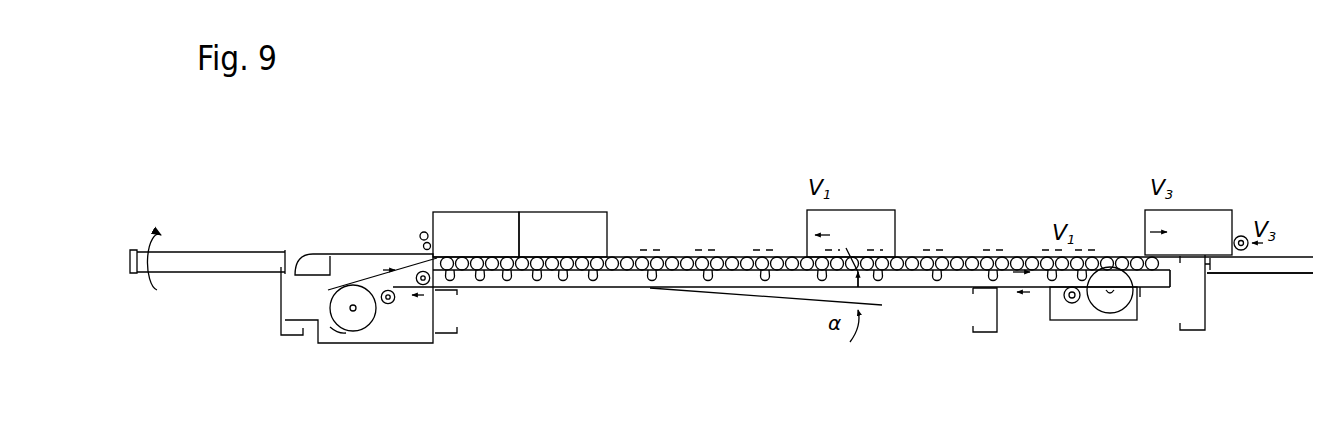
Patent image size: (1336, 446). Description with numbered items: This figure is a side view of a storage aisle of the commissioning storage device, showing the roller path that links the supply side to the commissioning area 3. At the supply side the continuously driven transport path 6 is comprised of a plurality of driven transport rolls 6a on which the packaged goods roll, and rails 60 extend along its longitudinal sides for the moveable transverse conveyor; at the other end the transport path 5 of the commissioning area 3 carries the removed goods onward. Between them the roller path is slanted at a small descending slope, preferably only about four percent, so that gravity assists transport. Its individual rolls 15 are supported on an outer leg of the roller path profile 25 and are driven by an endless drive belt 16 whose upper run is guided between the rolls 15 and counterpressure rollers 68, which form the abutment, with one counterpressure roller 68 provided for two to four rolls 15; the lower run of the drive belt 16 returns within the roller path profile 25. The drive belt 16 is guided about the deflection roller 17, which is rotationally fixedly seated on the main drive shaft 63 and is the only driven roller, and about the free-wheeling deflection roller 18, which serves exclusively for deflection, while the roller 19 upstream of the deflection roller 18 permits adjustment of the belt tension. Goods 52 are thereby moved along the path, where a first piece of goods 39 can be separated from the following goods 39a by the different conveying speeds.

The transport path 5 is at (213, 246).
The commissioning area 3 is at (438, 350).
The deflection roller 17 is at (362, 318).
The main drive shaft 63 is at (353, 305).
The drive belt 16 is at (377, 283).
The first piece of goods 39 is at (478, 222).
The following goods 39a is at (566, 222).
The rolls 15 is at (720, 262).
The roller path profile 25 is at (629, 278).
The counterpressure rollers 68 is at (537, 282).
The goods 52 is at (857, 228).
The deflection roller 18 is at (1113, 302).
The roller 19 is at (1072, 303).
The rails 60 is at (1205, 326).
The transport path 6 is at (1290, 252).
The transport rolls 6a is at (1292, 275).